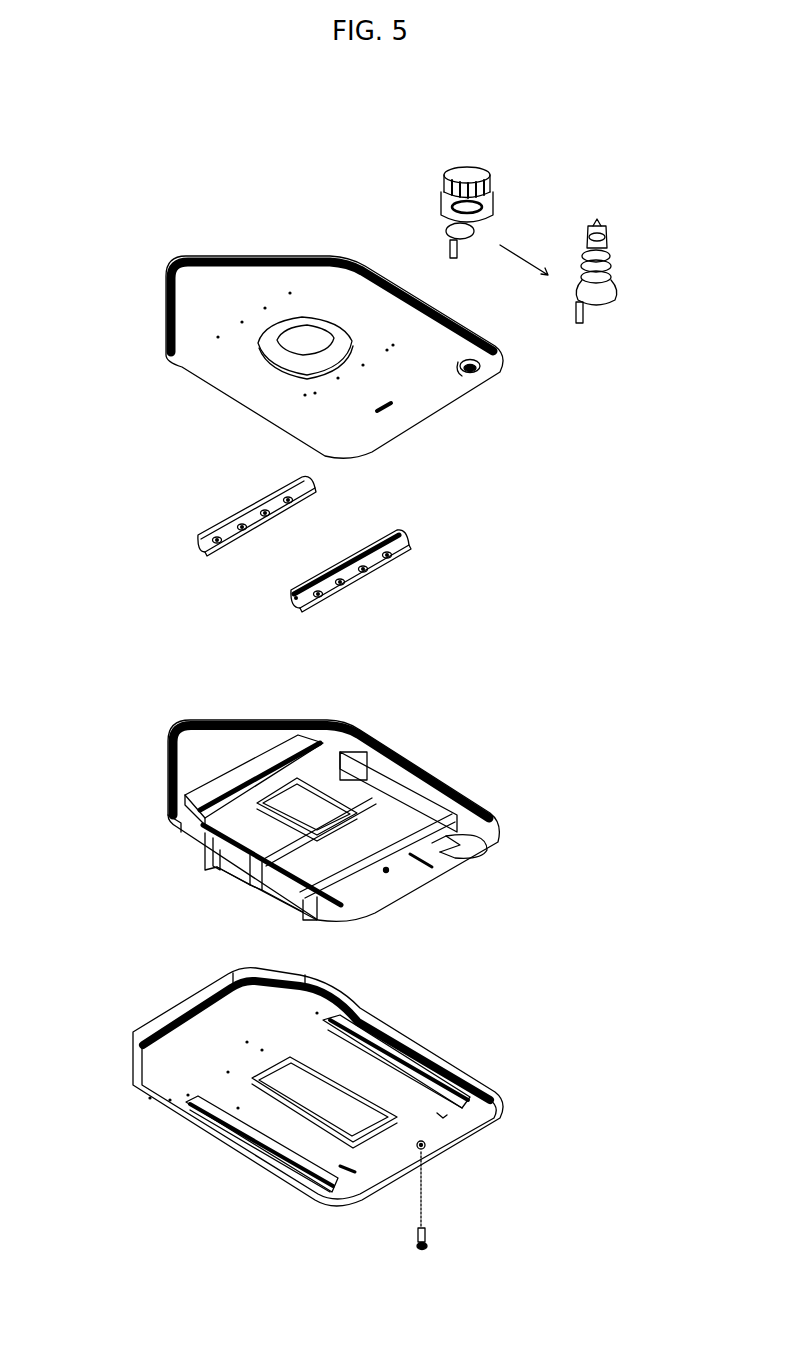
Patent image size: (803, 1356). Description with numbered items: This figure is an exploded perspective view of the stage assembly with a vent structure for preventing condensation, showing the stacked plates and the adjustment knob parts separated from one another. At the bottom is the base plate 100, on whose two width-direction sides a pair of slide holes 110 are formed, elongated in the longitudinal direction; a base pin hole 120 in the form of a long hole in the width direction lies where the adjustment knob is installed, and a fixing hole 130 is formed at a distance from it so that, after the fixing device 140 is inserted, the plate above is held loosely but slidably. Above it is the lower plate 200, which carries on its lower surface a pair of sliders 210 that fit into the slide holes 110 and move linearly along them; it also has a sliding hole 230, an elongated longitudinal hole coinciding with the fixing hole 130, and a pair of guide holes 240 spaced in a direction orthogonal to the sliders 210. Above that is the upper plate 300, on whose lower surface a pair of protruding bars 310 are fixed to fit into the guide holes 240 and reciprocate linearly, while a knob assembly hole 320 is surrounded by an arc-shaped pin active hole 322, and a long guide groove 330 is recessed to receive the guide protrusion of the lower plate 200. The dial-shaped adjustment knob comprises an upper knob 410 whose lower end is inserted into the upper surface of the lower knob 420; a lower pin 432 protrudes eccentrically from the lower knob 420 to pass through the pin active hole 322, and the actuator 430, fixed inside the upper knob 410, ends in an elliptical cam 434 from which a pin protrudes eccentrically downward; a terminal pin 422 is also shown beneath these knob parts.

The base plate 100 is at (132, 1086).
The slide hole 110 is at (208, 1148).
The base pin hole 120 is at (476, 1136).
The fixing hole 130 is at (426, 1150).
The fixing device 140 is at (420, 1248).
The lower plate 200 is at (186, 722).
The slider 210 is at (215, 880).
The sliding hole 230 is at (425, 862).
The guide hole 240 is at (172, 823).
The upper plate 300 is at (180, 368).
The protruding bar 310 is at (203, 550).
The knob assembly hole 320 is at (483, 380).
The pin active hole 322 is at (455, 370).
The guide groove 330 is at (384, 400).
The upper knob 410 is at (445, 171).
The lower knob 420 is at (440, 195).
The terminal pin 422 is at (450, 248).
The actuator 430 is at (608, 240).
The lower pin 432 is at (440, 218).
The elliptical cam 434 is at (612, 284).